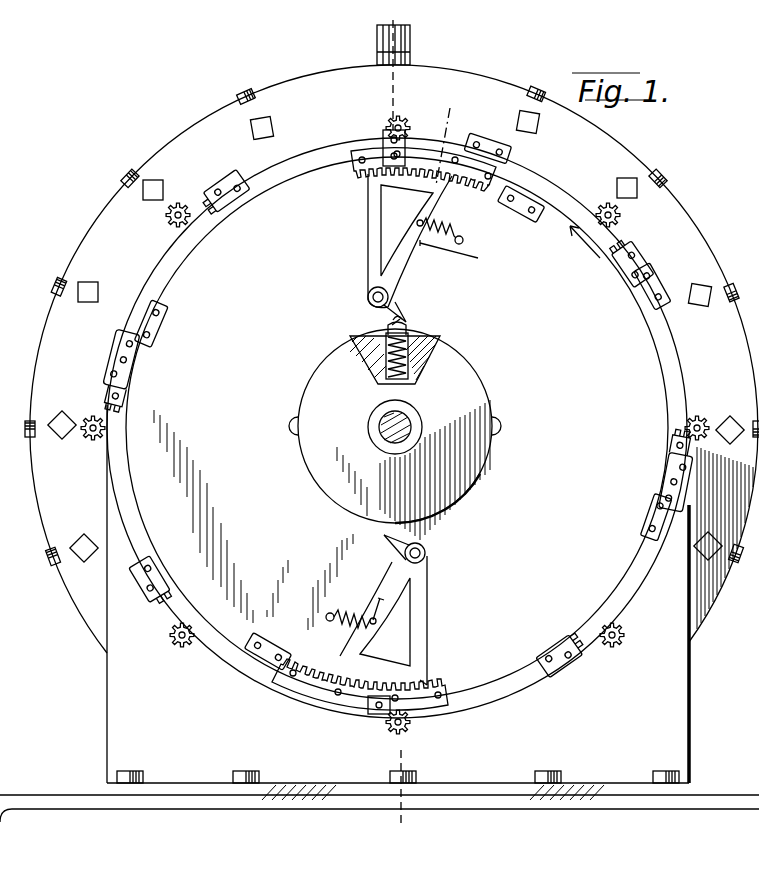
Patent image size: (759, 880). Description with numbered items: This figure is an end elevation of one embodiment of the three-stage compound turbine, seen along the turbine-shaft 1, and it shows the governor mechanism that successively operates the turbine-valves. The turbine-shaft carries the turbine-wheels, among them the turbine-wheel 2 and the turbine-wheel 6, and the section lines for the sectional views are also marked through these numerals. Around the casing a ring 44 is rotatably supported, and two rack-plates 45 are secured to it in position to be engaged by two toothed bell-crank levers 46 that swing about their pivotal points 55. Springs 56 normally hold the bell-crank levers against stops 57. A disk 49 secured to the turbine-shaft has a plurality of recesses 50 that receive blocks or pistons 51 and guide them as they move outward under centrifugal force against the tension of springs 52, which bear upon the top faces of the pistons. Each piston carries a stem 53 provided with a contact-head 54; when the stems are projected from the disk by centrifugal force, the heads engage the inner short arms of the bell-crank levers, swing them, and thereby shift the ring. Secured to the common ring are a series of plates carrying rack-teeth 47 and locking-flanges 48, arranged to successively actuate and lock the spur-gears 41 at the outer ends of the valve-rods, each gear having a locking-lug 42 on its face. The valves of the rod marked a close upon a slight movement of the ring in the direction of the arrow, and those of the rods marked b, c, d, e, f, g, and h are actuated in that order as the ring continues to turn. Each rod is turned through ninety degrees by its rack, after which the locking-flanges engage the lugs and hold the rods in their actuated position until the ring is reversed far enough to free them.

The turbine-shaft 1 is at (402, 424).
The turbine-wheel 2 is at (402, 28).
The turbine-wheel 6 is at (456, 190).
The spur-gear 41 is at (406, 126).
The locking-lug 42 is at (390, 128).
The ring 44 is at (117, 452).
The rack-plates 45 is at (372, 160).
The toothed bell-crank levers 46 is at (372, 247).
The rack-teeth 47 is at (640, 270).
The locking-flanges 48 is at (656, 290).
The disk 49 is at (462, 378).
The recesses 50 is at (382, 342).
The blocks or pistons 51 is at (410, 371).
The springs 52 is at (410, 341).
The stem 53 is at (408, 329).
The contact-head 54 is at (400, 323).
The pivotal points 55 is at (368, 297).
The springs 56 is at (456, 236).
The stops 57 is at (436, 430).
The rod a is at (414, 119).
The rod b is at (406, 727).
The rod c is at (90, 432).
The rod d is at (700, 420).
The rod e is at (166, 217).
The rod f is at (616, 642).
The rod g is at (618, 216).
The rod h is at (180, 645).